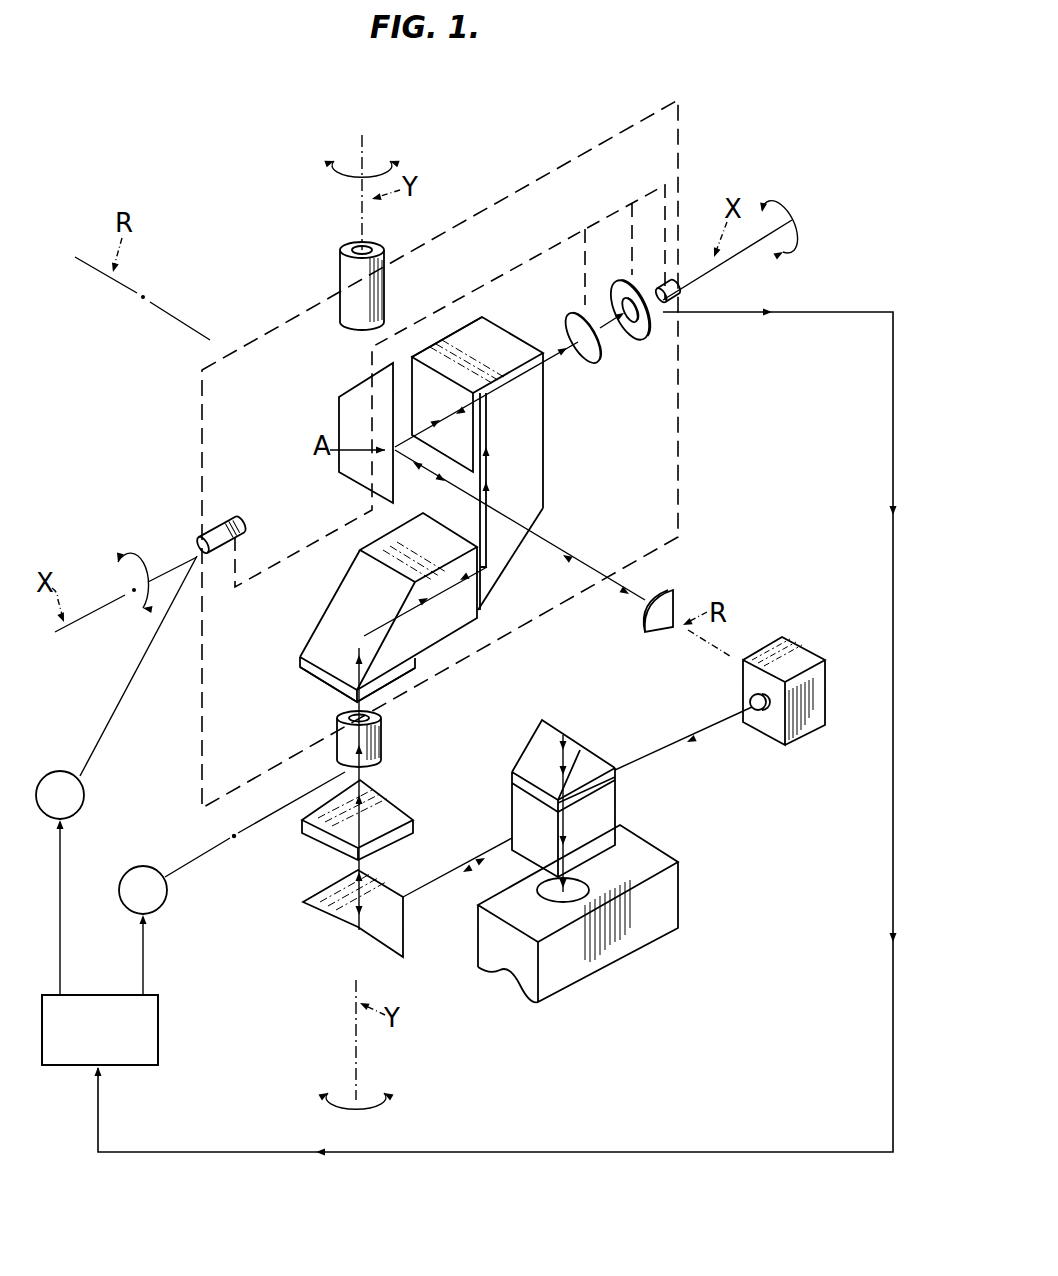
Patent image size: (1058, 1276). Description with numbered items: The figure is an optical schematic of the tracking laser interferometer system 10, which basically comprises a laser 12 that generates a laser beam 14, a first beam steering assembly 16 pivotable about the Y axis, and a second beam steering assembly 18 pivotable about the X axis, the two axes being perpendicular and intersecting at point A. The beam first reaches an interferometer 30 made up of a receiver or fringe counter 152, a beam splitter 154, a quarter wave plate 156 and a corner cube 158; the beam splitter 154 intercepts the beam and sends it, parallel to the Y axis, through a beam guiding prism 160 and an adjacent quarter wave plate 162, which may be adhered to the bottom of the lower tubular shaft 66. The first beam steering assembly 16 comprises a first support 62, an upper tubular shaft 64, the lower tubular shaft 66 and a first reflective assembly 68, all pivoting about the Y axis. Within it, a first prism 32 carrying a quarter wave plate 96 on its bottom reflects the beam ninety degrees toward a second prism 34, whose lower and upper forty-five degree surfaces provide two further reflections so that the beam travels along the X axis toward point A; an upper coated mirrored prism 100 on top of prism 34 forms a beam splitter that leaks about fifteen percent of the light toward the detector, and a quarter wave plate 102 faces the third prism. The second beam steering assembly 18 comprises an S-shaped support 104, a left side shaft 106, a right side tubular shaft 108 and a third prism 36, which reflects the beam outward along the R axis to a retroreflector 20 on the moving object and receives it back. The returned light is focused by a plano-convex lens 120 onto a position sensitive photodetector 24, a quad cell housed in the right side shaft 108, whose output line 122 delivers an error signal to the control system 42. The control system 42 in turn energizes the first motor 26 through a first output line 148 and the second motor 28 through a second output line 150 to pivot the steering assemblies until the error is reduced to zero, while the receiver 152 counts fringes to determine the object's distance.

The system 10 is at (746, 70).
The laser 12 is at (798, 735).
The laser beam 14 is at (722, 728).
The first beam steering assembly 16 is at (714, 489).
The second beam steering assembly 18 is at (310, 400).
The retroreflector 20 is at (656, 634).
The position sensitive photodetector 24 is at (642, 345).
The first motor 26 is at (168, 897).
The second motor 28 is at (84, 793).
The interferometer 30 is at (687, 845).
The first prism 32 is at (452, 628).
The second prism 34 is at (545, 492).
The third prism 36 is at (341, 478).
The control system 42 is at (58, 1070).
The first support 62 is at (606, 136).
The upper tubular shaft 64 is at (385, 246).
The lower tubular shaft 66 is at (387, 740).
The first reflective assembly 68 is at (551, 522).
The quarter wave plate 96 is at (320, 682).
The upper coated mirrored prism 100 is at (509, 332).
The quarter wave plate 102 is at (413, 352).
The second S-shaped support 104 is at (532, 255).
The left side shaft 106 is at (210, 521).
The right side tubular shaft 108 is at (686, 290).
The plano-convex lens 120 is at (598, 362).
The output line 122 is at (812, 311).
The first output line 148 is at (146, 938).
The second output line 150 is at (63, 858).
The receiver 152 is at (733, 908).
The beam splitter 154 is at (620, 808).
The quarter wave plate 156 is at (620, 778).
The corner cube 158 is at (586, 752).
The beam guiding prism 160 is at (360, 935).
The quarter wave plate 162 is at (400, 808).